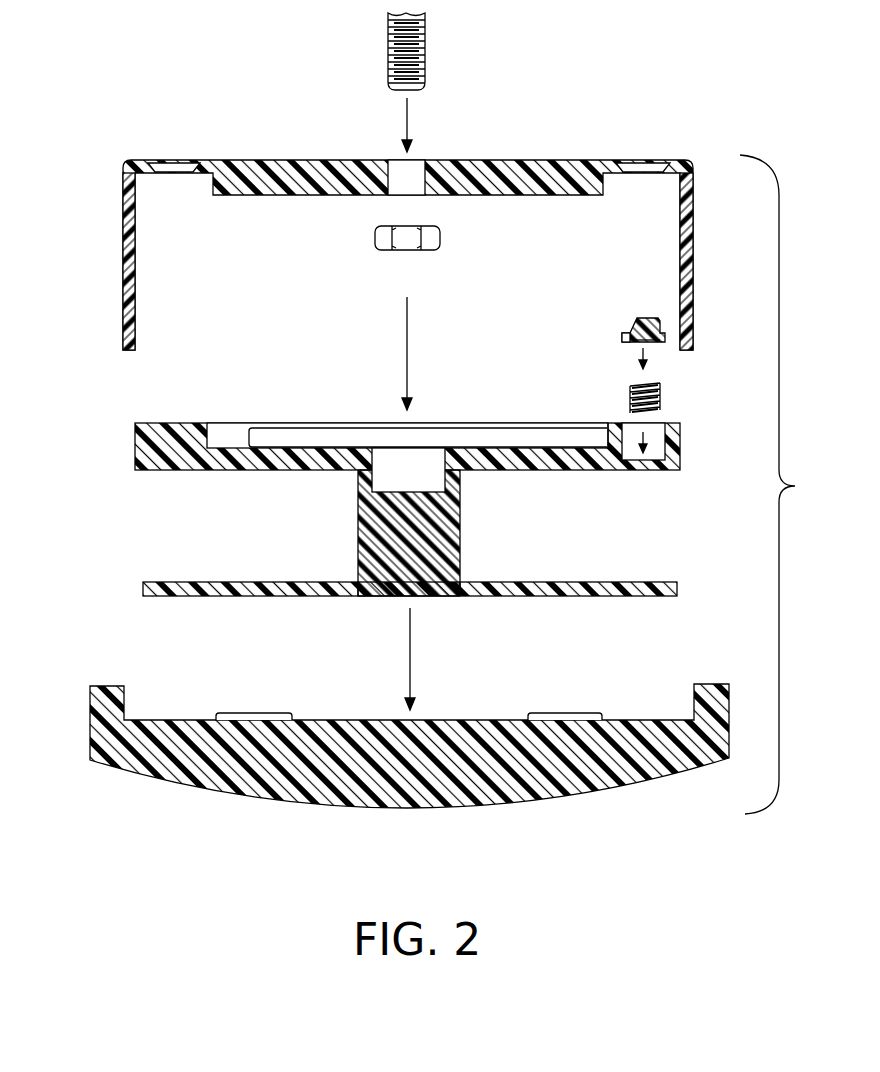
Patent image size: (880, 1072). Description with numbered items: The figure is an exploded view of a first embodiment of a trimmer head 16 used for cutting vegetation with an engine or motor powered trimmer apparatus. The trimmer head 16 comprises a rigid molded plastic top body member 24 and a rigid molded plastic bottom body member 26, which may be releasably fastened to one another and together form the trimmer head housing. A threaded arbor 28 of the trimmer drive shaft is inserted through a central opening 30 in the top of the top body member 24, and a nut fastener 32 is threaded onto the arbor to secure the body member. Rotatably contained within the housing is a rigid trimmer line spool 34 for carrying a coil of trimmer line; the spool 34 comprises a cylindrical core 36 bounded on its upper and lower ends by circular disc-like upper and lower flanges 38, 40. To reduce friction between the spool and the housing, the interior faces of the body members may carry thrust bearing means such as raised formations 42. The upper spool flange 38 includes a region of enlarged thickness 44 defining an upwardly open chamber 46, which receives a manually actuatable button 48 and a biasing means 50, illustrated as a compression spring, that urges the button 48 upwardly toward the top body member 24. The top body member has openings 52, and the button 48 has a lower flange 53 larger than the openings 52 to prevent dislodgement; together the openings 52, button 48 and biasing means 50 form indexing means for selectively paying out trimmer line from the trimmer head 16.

The trimmer head 16 is at (795, 486).
The top body member 24 is at (123, 338).
The bottom body member 26 is at (90, 722).
The threaded arbor 28 is at (425, 47).
The central opening 30 is at (398, 162).
The nut fastener 32 is at (375, 232).
The trimmer line spool 34 is at (125, 446).
The cylindrical core 36 is at (460, 533).
The upper spool flange 38 is at (252, 437).
The lower spool flange 40 is at (207, 582).
The raised formations 42 is at (258, 713).
The region of enlarged thickness 44 is at (608, 433).
The chamber 46 is at (665, 426).
The button 48 is at (642, 307).
The biasing means 50 is at (660, 390).
The openings 52 is at (172, 162).
The lower flange 53 is at (622, 338).